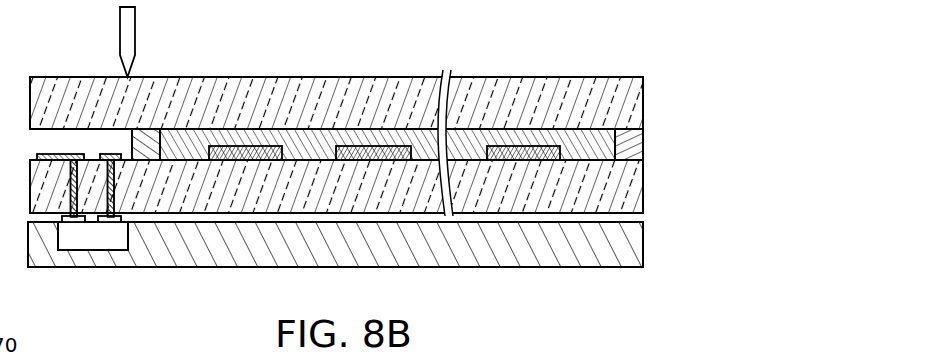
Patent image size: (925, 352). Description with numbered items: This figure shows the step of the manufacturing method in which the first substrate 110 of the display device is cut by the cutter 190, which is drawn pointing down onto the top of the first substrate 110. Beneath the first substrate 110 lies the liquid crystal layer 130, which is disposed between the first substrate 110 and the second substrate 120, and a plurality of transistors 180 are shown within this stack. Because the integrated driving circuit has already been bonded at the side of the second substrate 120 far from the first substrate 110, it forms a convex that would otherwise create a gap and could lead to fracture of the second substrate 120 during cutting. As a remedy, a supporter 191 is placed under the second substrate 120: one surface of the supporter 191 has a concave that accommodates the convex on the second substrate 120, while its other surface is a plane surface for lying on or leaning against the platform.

The first substrate 110 is at (628, 105).
The second substrate 120 is at (628, 185).
The liquid crystal layer 130 is at (590, 146).
The transistors 180 is at (521, 148).
The cutter 190 is at (127, 33).
The supporter 191 is at (170, 253).